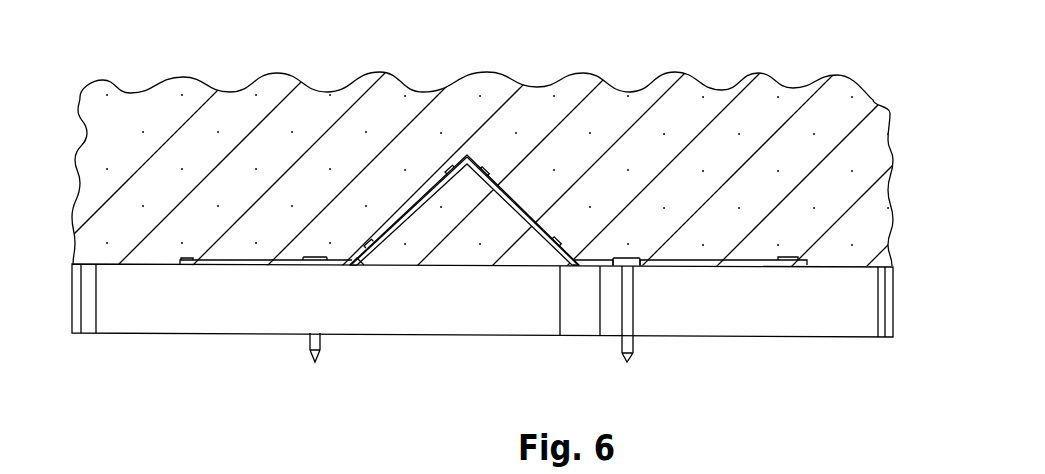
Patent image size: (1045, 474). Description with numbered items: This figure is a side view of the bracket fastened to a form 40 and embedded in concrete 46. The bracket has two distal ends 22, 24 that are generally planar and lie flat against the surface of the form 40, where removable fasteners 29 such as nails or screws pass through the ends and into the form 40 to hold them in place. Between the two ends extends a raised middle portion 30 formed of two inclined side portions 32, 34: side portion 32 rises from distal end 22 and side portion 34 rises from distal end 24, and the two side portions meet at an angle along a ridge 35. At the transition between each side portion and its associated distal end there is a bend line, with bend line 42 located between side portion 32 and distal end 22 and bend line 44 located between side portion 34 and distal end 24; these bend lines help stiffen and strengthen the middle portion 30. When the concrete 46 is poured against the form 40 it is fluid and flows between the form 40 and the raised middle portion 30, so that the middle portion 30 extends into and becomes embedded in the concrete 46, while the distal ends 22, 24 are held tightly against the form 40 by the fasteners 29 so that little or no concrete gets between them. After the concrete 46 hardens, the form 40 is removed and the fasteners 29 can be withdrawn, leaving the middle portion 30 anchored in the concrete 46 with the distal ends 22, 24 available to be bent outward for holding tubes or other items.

The distal end 22 is at (697, 262).
The distal end 24 is at (258, 261).
The removable fastener 29 is at (307, 348).
The middle portion 30 is at (438, 219).
The inclined side portion 32 is at (530, 273).
The inclined side portion 34 is at (377, 248).
The ridge 35 is at (468, 156).
The form 40 is at (178, 310).
The bend line 42 is at (578, 258).
The bend line 44 is at (357, 258).
The concrete 46 is at (182, 127).